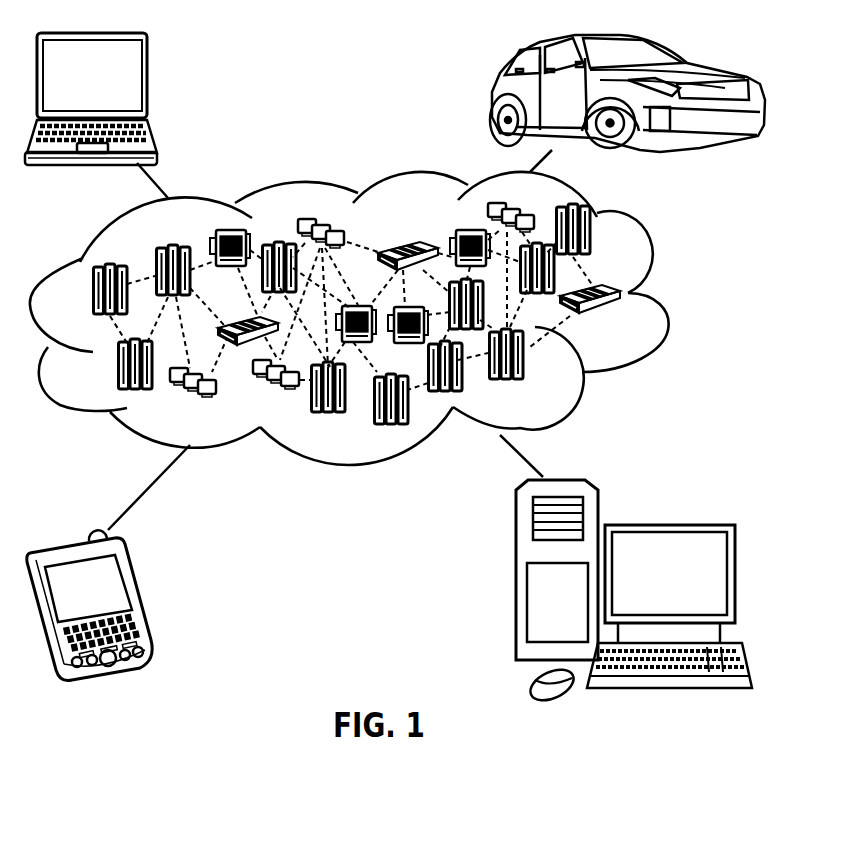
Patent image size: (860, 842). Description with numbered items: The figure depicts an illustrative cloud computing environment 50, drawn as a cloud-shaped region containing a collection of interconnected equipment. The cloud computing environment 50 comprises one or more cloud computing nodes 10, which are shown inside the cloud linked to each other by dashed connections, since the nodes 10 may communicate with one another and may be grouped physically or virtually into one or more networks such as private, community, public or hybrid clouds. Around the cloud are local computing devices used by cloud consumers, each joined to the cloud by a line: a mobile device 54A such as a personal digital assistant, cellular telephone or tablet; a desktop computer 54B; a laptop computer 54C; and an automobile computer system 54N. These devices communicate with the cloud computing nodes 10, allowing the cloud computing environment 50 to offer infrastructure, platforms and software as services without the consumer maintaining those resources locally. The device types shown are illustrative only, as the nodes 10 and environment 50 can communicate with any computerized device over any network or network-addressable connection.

The cloud computing node 10 is at (629, 321).
The cloud computing environment 50 is at (668, 298).
The mobile device 54A is at (143, 597).
The desktop computer 54B is at (665, 523).
The laptop computer 54C is at (147, 83).
The automobile computer system 54N is at (492, 92).